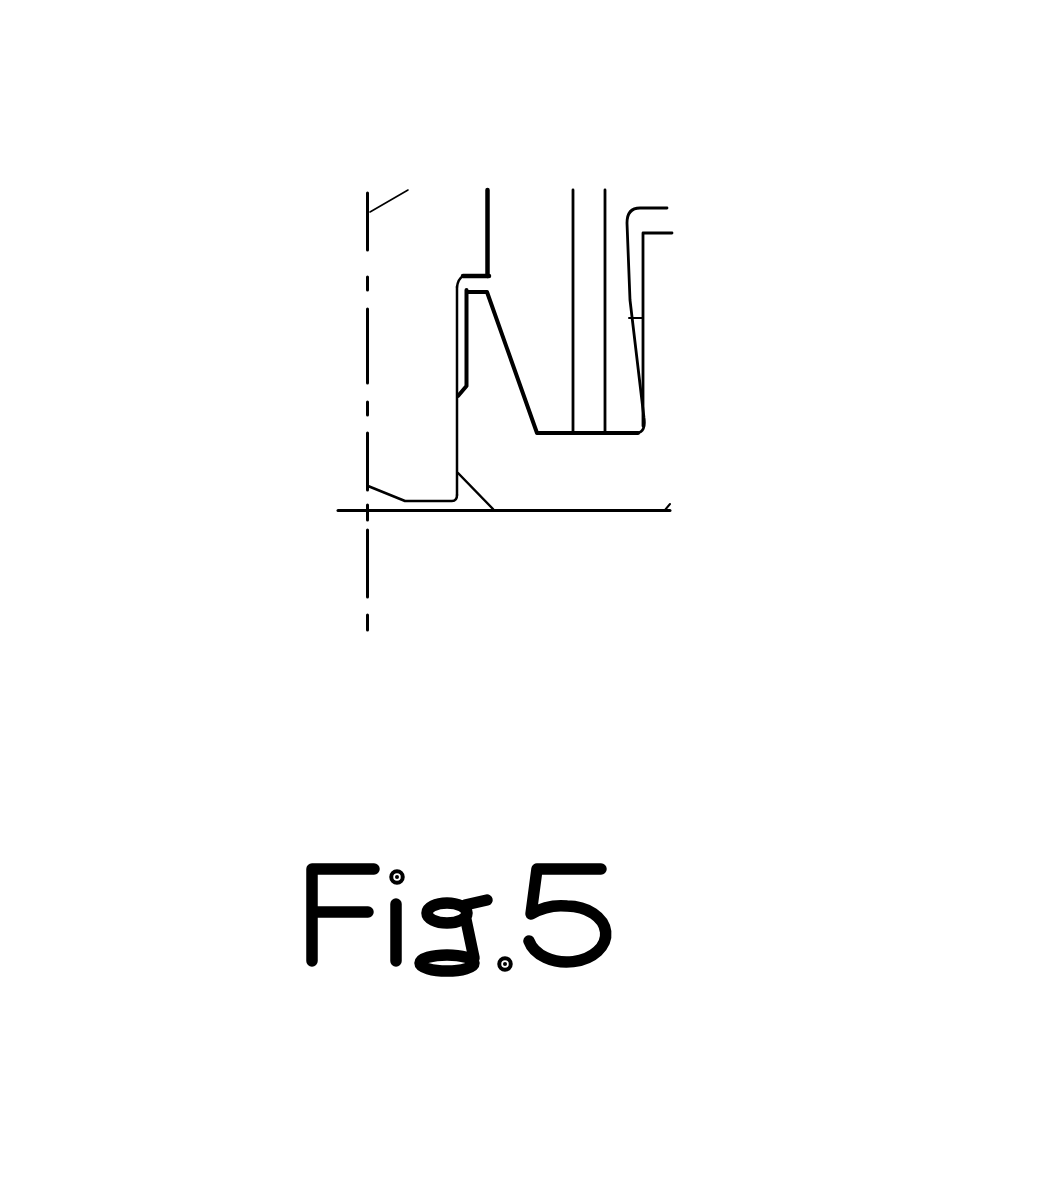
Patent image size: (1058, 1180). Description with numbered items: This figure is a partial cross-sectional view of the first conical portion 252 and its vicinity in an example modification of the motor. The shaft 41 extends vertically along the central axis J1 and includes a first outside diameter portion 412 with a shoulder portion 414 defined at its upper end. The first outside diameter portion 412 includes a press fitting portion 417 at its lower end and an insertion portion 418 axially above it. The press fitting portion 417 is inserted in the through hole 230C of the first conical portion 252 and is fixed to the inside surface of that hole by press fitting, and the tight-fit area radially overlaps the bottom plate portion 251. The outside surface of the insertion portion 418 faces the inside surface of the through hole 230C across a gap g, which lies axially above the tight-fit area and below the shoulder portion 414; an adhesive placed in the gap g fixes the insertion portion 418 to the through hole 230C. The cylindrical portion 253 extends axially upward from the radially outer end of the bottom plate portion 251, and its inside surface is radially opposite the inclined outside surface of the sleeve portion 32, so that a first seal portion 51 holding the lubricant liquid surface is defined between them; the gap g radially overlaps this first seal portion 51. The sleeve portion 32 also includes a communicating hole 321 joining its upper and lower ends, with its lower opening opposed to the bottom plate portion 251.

The central axis J1 is at (360, 202).
The shaft 41 is at (383, 232).
The sleeve portion 32 is at (510, 220).
The shoulder portion 414 is at (457, 287).
The first outside diameter portion 412 is at (222, 430).
The insertion portion 418 is at (457, 332).
The press fitting portion 417 is at (457, 435).
The gap g is at (461, 307).
The first conical portion 252 is at (495, 393).
The communicating hole 321 is at (587, 208).
The first seal portion 51 is at (628, 257).
The cylindrical portion 253 is at (668, 277).
The bottom plate portion 251 is at (601, 496).
The through hole 230C is at (462, 495).